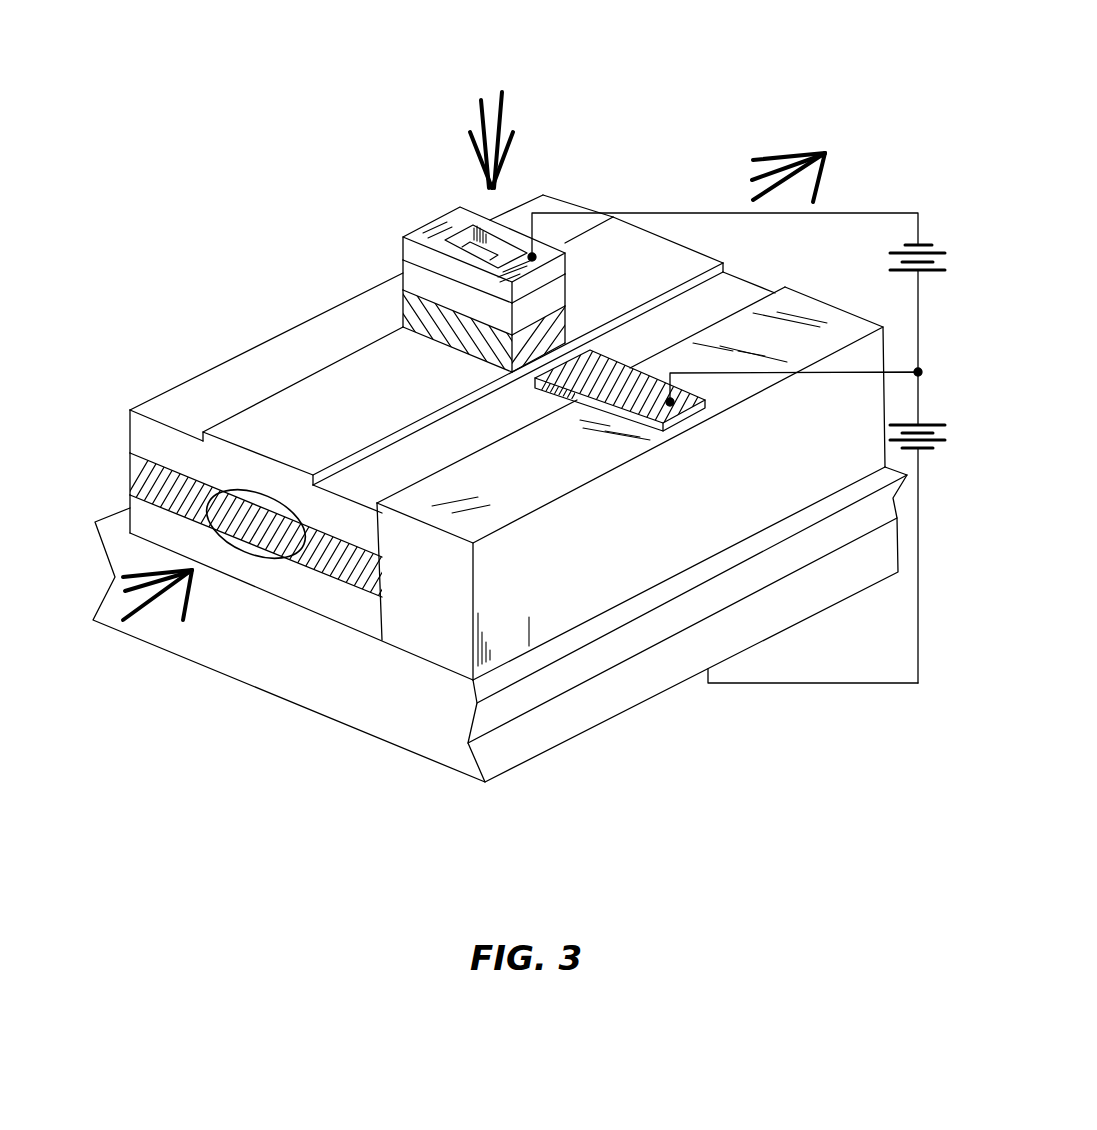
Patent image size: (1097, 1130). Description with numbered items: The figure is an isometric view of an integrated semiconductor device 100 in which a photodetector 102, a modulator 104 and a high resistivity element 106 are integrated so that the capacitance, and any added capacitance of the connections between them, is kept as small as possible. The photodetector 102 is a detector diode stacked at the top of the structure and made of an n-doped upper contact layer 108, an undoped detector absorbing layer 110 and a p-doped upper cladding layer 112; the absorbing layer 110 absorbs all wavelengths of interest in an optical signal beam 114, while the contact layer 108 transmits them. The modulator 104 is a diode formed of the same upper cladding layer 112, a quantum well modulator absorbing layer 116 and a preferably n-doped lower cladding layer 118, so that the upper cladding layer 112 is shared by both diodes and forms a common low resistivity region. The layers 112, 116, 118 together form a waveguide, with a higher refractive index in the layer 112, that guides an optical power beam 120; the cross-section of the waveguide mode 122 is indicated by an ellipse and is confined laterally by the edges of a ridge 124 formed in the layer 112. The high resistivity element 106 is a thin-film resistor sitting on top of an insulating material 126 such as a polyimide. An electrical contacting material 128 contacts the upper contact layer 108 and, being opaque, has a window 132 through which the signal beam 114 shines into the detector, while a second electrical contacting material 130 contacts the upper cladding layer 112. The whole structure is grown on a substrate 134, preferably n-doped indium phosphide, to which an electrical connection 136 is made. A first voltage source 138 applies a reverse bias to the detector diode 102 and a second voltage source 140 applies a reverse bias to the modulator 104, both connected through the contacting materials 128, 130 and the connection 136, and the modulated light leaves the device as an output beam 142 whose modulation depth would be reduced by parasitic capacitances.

The integrated semiconductor device 100 is at (286, 79).
The photodetector 102 is at (272, 240).
The modulator 104 is at (385, 513).
The high resistivity element 106 is at (605, 360).
The upper contact layer 108 is at (408, 274).
The detector absorbing layer 110 is at (402, 313).
The upper cladding layer 112 is at (245, 368).
The optical signal beam 114 is at (480, 113).
The quantum well modulator absorbing layer 116 is at (130, 473).
The lower cladding layer 118 is at (340, 605).
The optical power beam 120 is at (142, 617).
The waveguide mode 122 is at (262, 553).
The ridge 124 is at (202, 433).
The insulating material 126 is at (560, 550).
The electrical contacting material 128 is at (398, 240).
The electrical contacting material 130 is at (497, 382).
The window 132 is at (493, 240).
The substrate 134 is at (330, 707).
The electrical connection 136 is at (817, 685).
The first voltage source 138 is at (908, 243).
The second voltage source 140 is at (905, 423).
The output beam 142 is at (767, 157).